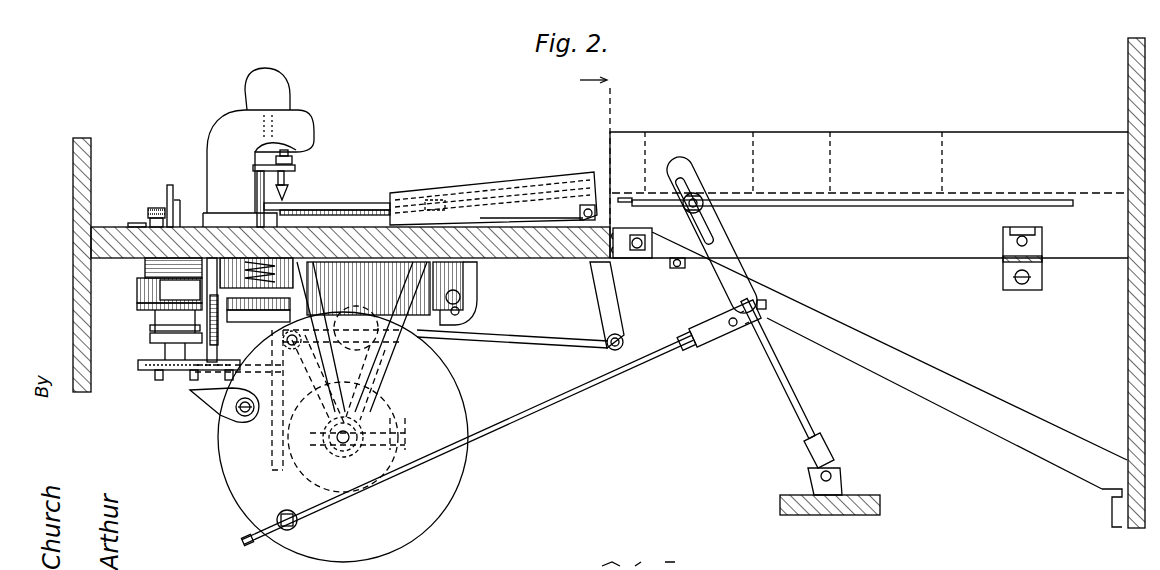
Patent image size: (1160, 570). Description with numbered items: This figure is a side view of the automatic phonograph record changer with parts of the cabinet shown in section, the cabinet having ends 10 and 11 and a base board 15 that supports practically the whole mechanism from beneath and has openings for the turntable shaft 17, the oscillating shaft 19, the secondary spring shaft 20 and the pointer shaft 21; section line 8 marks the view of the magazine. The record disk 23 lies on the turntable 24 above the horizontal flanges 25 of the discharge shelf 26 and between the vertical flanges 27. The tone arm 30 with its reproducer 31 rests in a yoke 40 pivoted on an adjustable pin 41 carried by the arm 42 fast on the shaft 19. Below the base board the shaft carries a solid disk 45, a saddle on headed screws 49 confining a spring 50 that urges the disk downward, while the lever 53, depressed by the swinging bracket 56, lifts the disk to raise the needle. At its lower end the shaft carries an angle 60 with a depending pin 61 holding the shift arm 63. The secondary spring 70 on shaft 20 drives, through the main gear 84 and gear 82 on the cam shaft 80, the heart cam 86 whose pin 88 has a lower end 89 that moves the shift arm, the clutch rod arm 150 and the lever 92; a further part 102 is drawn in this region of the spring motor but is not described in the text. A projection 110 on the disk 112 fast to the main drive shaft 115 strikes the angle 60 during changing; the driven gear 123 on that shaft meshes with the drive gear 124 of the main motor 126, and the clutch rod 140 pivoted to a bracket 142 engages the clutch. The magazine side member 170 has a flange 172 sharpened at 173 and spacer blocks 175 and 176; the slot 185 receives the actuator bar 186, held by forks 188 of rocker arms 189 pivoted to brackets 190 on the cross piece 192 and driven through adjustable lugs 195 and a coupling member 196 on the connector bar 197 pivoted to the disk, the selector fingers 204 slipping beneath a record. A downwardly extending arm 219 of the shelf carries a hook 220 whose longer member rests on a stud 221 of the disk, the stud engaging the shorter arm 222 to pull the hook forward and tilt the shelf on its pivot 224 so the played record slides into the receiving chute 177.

The section line 8 is at (620, 282).
The cabinet end 10 is at (73, 268).
The cabinet end 11 is at (1127, 73).
The base board 15 is at (105, 235).
The turntable shaft 17 is at (432, 205).
The oscillating shaft 19 is at (257, 198).
The shaft 20 is at (166, 200).
The pointer shaft 21 is at (150, 210).
The phonograph record disk 23 is at (348, 203).
The turntable 24 is at (338, 215).
The horizontal flange 25 is at (410, 195).
The shelf 26 is at (520, 193).
The vertical flange 27 is at (490, 196).
The tone arm 30 is at (215, 136).
The reproducer 31 is at (248, 93).
The yoke 40 is at (302, 150).
The adjustable pin 41 is at (294, 158).
The arm 42 is at (296, 168).
The solid disk 45 is at (258, 302).
The headed screws 49 is at (311, 335).
The spring 50 is at (256, 273).
The lever 53 is at (258, 316).
The swinging bracket 56 is at (218, 320).
The angle 60 is at (226, 364).
The depending pin 61 is at (248, 364).
The shift arm 63 is at (195, 370).
The secondary spring 70 is at (137, 295).
The cam shaft 80 is at (205, 379).
The gear 82 is at (180, 290).
The main gear 84 is at (137, 308).
The heart cam 86 is at (156, 340).
The brake operating pin 88 is at (117, 345).
The lower end of pin 89 is at (153, 383).
The lever 92 is at (150, 333).
The plate 102 is at (205, 345).
The projection 110 is at (198, 398).
The disk 112 is at (220, 470).
The main drive shaft 115 is at (343, 445).
The driven gear 123 is at (400, 447).
The drive gear 124 is at (398, 380).
The main motor 126 is at (398, 362).
The clutch rod 140 is at (284, 449).
The bracket 142 is at (400, 416).
The arm of clutch rod 150 is at (140, 374).
The magazine side member 170 is at (830, 132).
The inward-extending flange 172 is at (784, 195).
The sharpened front end 173 is at (615, 193).
The front spacer block 175 is at (660, 146).
The rear spacer block 176 is at (883, 145).
The receiving chute 177 is at (812, 310).
The slot 185 is at (872, 201).
The actuator bar 186 is at (698, 198).
The fork 188 is at (720, 236).
The rocker arm 189 is at (777, 382).
The bracket 190 is at (843, 474).
The cross piece 192 is at (870, 499).
The adjustable lug 195 is at (745, 336).
The coupling member 196 is at (712, 320).
The connector bar 197 is at (542, 403).
The downturned finger 204 is at (645, 203).
The downwardly extending arm 219 is at (614, 318).
The hook 220 is at (558, 336).
The stud 221 is at (300, 345).
The shorter arm 222 is at (239, 414).
The pivot 224 is at (585, 205).